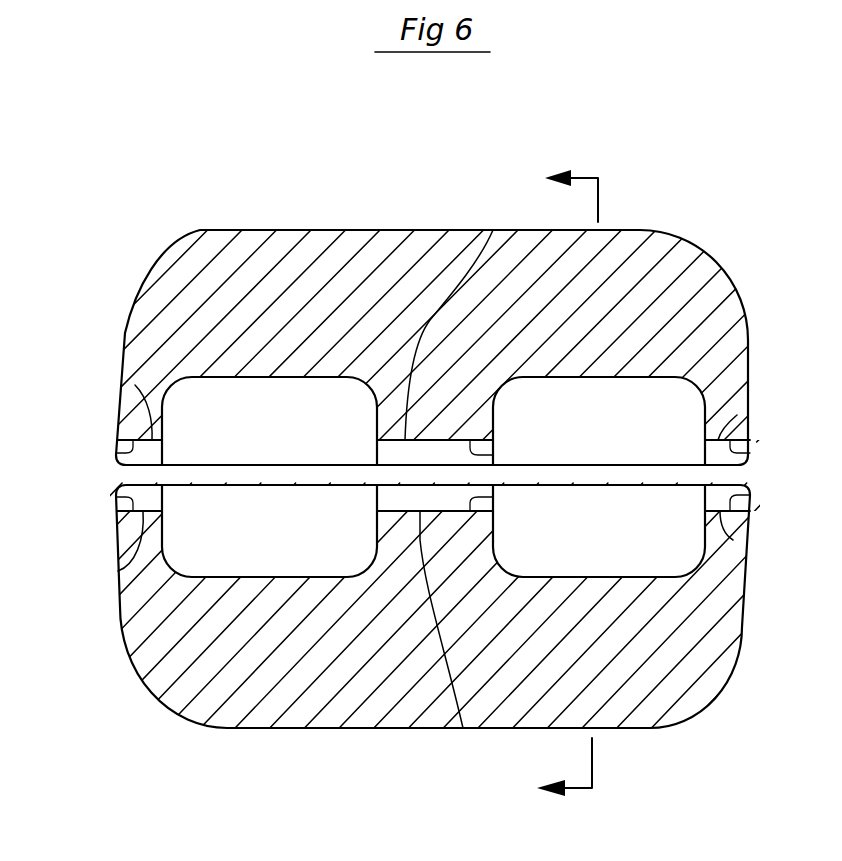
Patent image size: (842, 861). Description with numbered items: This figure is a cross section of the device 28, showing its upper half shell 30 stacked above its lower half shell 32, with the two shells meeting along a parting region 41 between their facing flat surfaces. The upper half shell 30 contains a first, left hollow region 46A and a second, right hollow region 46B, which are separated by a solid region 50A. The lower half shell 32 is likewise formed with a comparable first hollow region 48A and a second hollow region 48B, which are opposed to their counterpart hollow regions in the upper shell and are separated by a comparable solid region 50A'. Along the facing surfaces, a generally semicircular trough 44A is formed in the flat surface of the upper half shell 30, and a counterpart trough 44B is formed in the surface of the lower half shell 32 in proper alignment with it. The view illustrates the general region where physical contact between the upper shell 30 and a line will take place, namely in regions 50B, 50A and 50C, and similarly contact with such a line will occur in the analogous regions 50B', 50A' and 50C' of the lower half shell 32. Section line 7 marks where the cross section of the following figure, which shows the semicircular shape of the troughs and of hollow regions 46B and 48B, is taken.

The device 28 is at (248, 207).
The upper half shell 30 is at (396, 263).
The lower half shell 32 is at (397, 685).
The parting line / gap 41 is at (102, 473).
The trough 44A is at (118, 450).
The counterpart trough 44B is at (118, 494).
The first hollow region 46A is at (305, 435).
The second hollow region 46B is at (635, 435).
The first hollow region 48A is at (300, 536).
The second hollow region 48B is at (638, 539).
The solid region 50A is at (481, 300).
The solid region 50A' is at (453, 657).
The contact region 50B is at (289, 454).
The contact region 50B' is at (84, 547).
The contact region 50C is at (769, 395).
The contact region 50C' is at (774, 553).
The section line 7— 7 is at (581, 485).